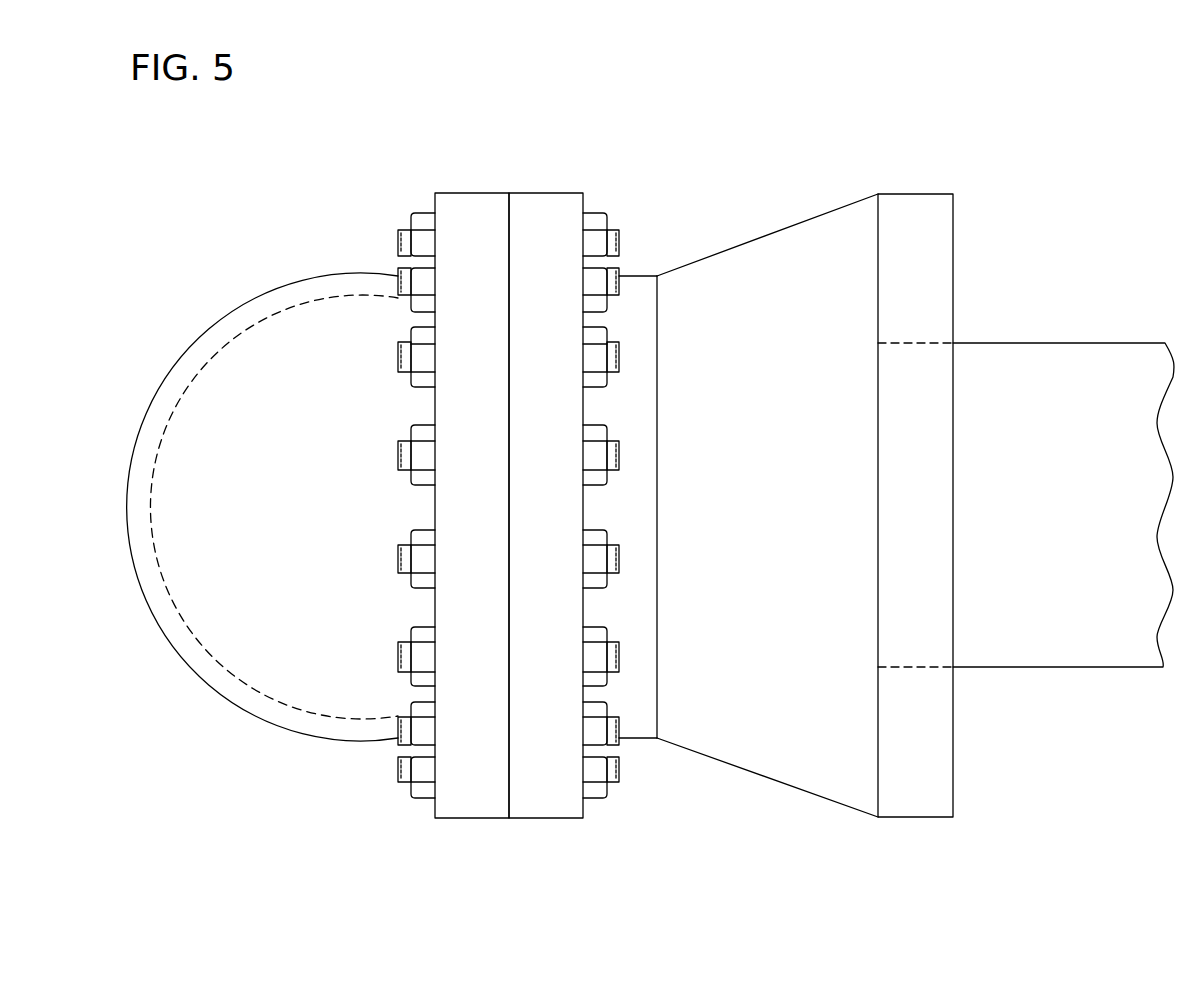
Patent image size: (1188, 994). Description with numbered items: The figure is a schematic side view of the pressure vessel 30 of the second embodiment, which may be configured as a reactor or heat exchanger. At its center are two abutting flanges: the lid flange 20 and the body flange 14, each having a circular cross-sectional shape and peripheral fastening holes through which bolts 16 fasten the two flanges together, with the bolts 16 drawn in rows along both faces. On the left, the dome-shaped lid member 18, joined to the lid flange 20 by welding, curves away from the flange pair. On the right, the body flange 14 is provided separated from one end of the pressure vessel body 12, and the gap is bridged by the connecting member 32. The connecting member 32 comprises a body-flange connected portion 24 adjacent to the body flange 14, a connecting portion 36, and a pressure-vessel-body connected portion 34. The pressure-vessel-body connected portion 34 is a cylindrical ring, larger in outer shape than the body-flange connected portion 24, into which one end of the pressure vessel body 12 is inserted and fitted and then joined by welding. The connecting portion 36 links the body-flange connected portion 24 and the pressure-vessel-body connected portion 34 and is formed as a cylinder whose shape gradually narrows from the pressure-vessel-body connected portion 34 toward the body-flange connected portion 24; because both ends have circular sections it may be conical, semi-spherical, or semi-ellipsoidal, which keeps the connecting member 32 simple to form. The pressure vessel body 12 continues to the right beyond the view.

The pressure vessel body 12 is at (1063, 342).
The body flange 14 is at (547, 192).
The bolts 16 is at (407, 228).
The lid member 18 is at (253, 655).
The lid flange 20 is at (477, 192).
The body-flange connected portion 24 is at (640, 720).
The pressure vessel 30 is at (262, 443).
The connecting member 32 is at (805, 515).
The pressure-vessel-body connected portion 34 is at (913, 797).
The connecting portion 36 is at (777, 763).